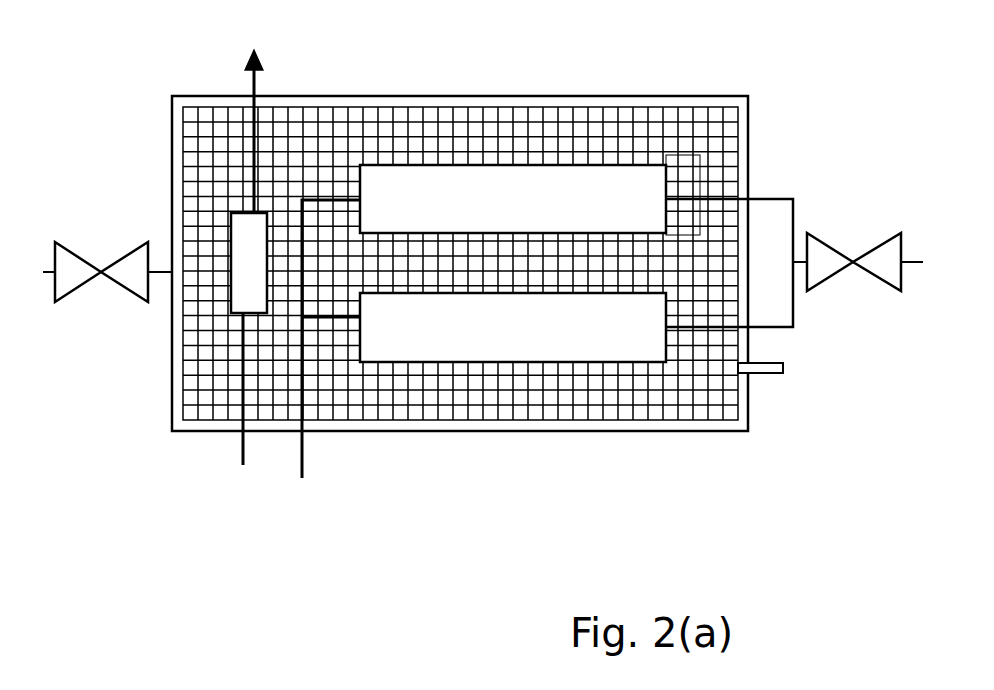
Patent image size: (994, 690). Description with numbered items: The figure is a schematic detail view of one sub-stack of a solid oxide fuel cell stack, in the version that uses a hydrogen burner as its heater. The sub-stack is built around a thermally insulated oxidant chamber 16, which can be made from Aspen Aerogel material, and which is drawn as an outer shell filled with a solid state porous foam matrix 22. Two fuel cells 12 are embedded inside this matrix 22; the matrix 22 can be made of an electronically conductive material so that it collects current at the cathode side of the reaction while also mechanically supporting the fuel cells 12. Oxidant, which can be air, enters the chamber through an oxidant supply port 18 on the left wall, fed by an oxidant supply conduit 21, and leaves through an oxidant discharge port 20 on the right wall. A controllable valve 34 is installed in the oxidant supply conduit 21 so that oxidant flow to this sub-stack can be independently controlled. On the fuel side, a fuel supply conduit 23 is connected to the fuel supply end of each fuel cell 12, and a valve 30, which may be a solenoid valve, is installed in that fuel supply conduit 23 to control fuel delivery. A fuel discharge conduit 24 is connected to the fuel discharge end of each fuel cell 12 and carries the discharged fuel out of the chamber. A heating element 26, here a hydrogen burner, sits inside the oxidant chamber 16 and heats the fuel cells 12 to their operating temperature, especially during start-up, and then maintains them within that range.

The fuel cell 12 is at (607, 165).
The oxidant chamber 16 is at (537, 95).
The oxidant supply port 18 is at (160, 262).
The oxidant discharge port 20 is at (762, 375).
The oxidant supply conduit 21 is at (43, 272).
The solid state porous foam matrix 22 is at (349, 130).
The fuel supply conduit 23 is at (912, 258).
The fuel discharge conduit 24 is at (300, 457).
The heating element 26 is at (242, 247).
The valve 30 is at (888, 247).
The controllable valve 34 is at (137, 257).